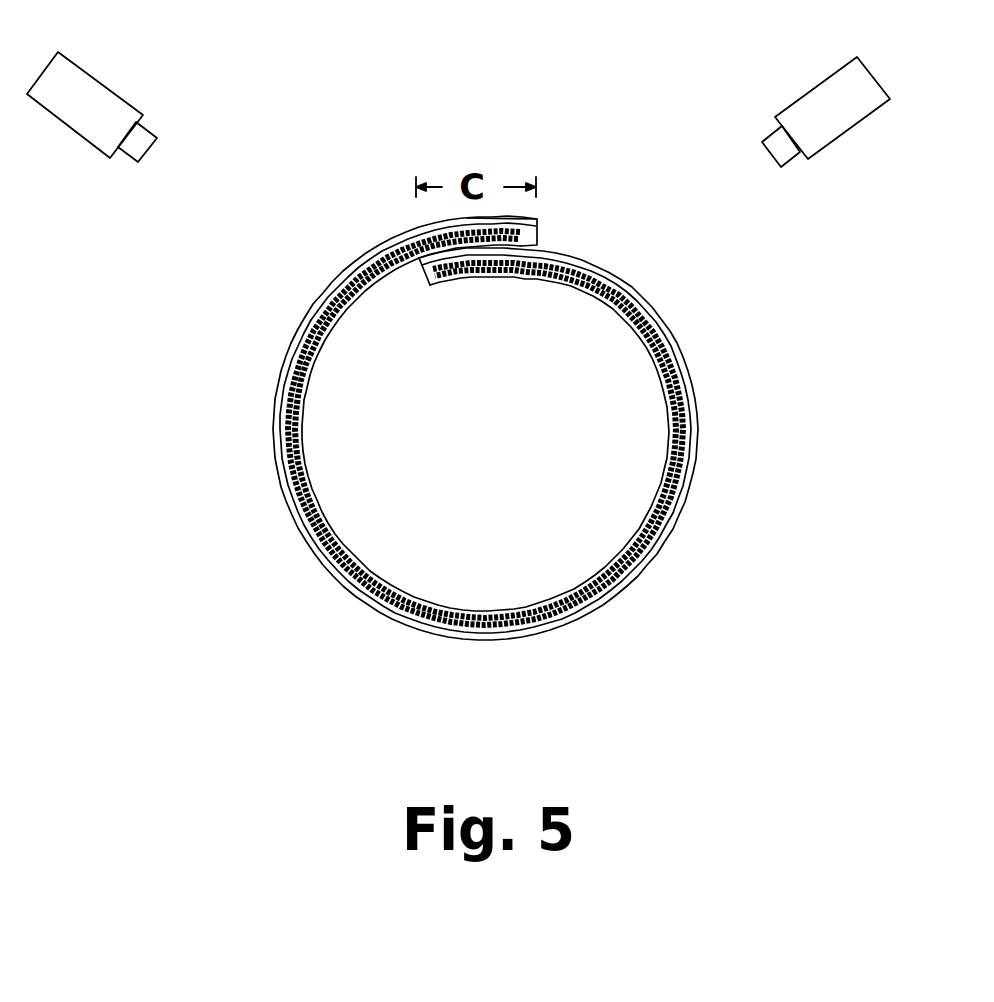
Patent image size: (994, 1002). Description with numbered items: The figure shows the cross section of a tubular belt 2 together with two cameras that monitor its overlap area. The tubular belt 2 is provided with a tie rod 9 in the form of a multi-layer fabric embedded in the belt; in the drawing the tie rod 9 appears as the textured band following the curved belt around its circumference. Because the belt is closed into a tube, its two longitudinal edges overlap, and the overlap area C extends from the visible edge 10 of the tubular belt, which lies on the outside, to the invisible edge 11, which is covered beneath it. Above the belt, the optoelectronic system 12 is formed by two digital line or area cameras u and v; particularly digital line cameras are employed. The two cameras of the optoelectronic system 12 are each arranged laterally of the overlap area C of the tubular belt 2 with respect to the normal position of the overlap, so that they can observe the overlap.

The tubular belt 2 is at (520, 428).
The tie rod 9 is at (523, 428).
The visible edge of tubular belt 10 is at (581, 240).
The invisible edge of tubular belt 11 is at (405, 303).
The optoelectronic system 12 is at (458, 86).